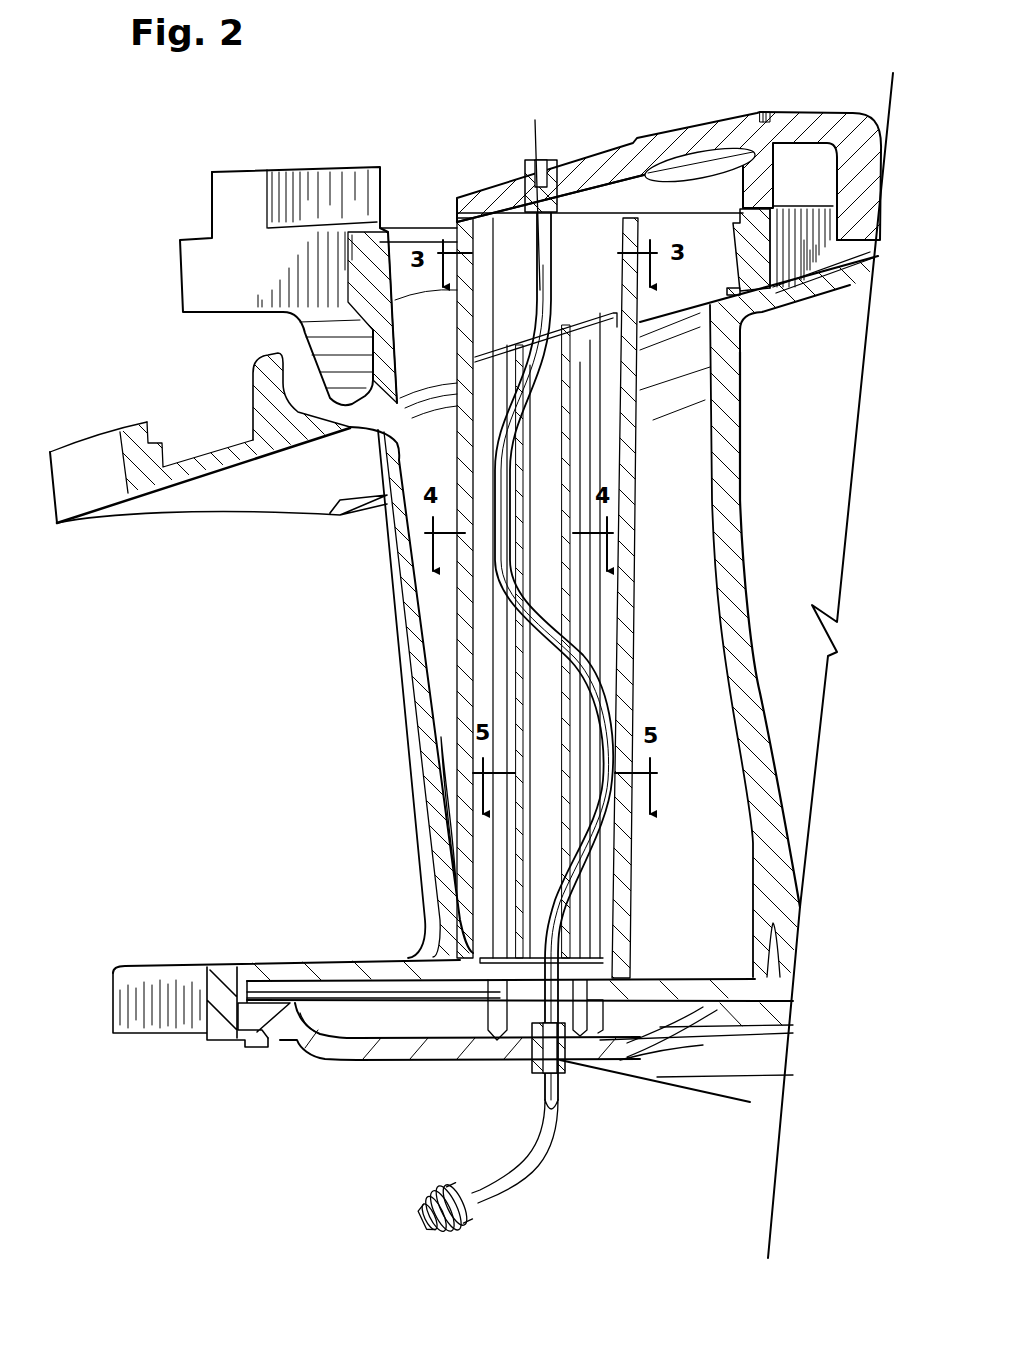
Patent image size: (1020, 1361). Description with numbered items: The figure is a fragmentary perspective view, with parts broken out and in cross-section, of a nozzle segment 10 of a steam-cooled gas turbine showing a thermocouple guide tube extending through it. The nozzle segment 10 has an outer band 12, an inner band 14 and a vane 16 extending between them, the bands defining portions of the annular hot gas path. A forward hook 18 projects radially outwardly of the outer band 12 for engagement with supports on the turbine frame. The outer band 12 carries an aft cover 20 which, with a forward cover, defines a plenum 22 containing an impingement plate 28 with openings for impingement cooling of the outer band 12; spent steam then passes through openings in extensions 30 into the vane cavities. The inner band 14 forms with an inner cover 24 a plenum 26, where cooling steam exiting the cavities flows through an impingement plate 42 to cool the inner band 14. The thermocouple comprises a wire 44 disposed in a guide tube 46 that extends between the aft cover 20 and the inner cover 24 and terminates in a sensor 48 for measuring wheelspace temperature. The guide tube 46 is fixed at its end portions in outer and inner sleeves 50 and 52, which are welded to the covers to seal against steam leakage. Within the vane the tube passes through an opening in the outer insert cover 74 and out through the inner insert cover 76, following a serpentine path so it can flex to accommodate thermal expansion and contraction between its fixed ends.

The nozzle segment 10 is at (176, 343).
The outer band 12 is at (190, 495).
The inner band 14 is at (272, 963).
The vane 16 is at (402, 693).
The forward hook 18 is at (232, 208).
The aft cover 20 is at (610, 167).
The plenum 22 is at (805, 253).
The inner cover 24 is at (352, 1048).
The plenum 26 is at (427, 1023).
The impingement plate 28 is at (853, 293).
The extensions 30 is at (738, 237).
The impingement plate 42 is at (335, 992).
The wire 44 is at (537, 233).
The guide tube 46 is at (535, 292).
The sensor 48 is at (467, 1230).
The outer sleeve 50 is at (526, 158).
The inner sleeve 52 is at (560, 1073).
The outer insert cover 74 is at (602, 317).
The inner insert cover 76 is at (490, 957).